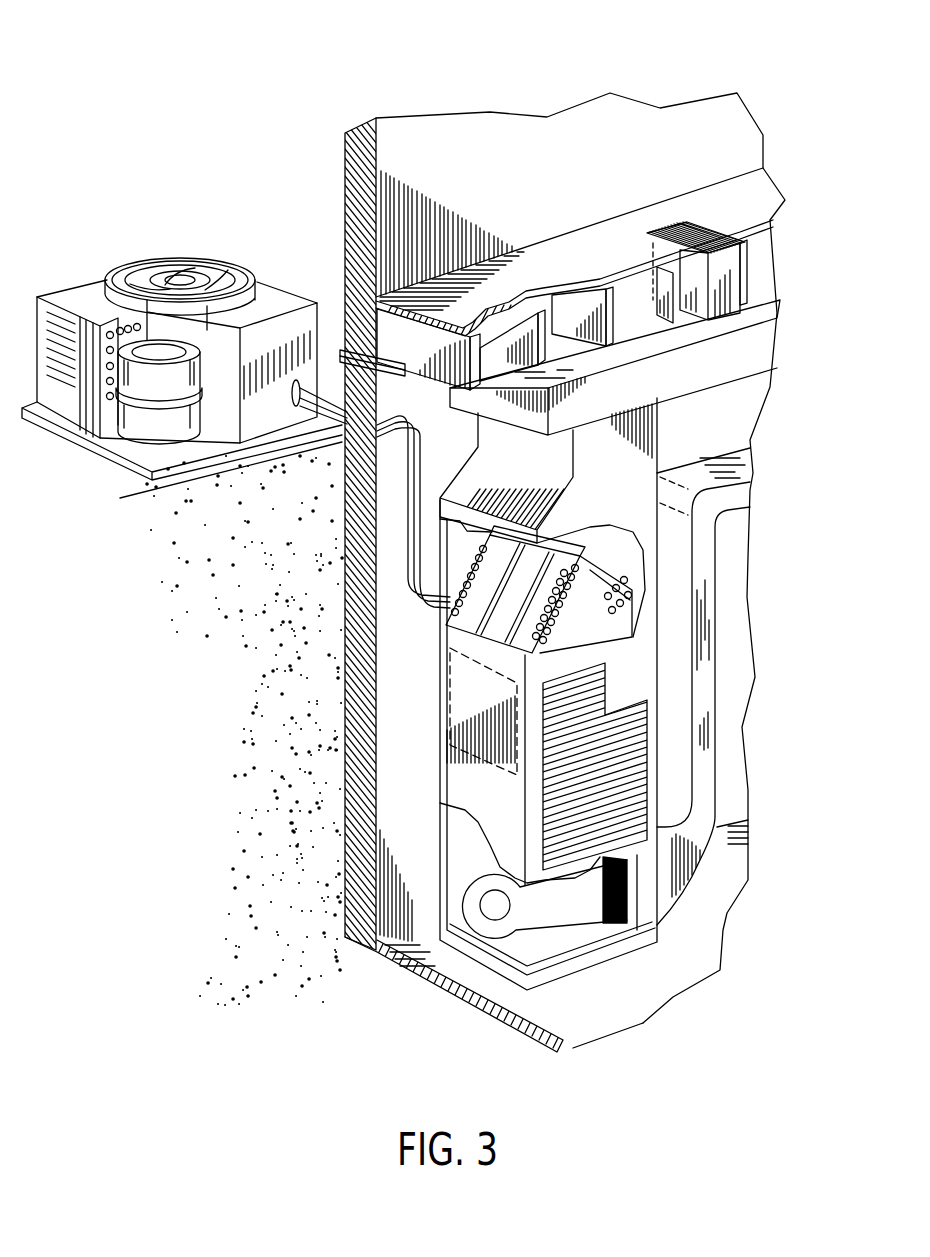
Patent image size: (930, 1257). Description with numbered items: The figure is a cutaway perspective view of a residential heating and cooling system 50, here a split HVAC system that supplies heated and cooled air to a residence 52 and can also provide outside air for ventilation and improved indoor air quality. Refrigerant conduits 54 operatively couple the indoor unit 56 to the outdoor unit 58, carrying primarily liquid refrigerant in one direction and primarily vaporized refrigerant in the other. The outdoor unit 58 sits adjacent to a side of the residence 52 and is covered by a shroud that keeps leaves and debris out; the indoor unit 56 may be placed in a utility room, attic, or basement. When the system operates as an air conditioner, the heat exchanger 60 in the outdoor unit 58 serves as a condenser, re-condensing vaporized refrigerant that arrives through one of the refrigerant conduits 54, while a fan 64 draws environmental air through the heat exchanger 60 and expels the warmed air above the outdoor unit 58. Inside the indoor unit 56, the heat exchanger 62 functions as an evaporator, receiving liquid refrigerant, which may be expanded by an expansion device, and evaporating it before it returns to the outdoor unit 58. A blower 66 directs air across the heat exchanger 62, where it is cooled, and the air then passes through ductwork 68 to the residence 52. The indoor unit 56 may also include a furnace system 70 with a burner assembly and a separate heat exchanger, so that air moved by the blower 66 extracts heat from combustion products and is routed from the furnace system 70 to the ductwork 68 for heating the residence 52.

The residential heating and cooling system 50 is at (178, 87).
The residence 52 is at (477, 138).
The refrigerant conduits 54 is at (408, 508).
The indoor unit 56 is at (418, 749).
The outdoor unit 58 is at (140, 250).
The heat exchanger 60 is at (113, 323).
The heat exchanger 62 is at (500, 623).
The fan 64 is at (200, 268).
The blower 66 is at (490, 930).
The ductwork 68 is at (700, 360).
The furnace system 70 is at (440, 707).